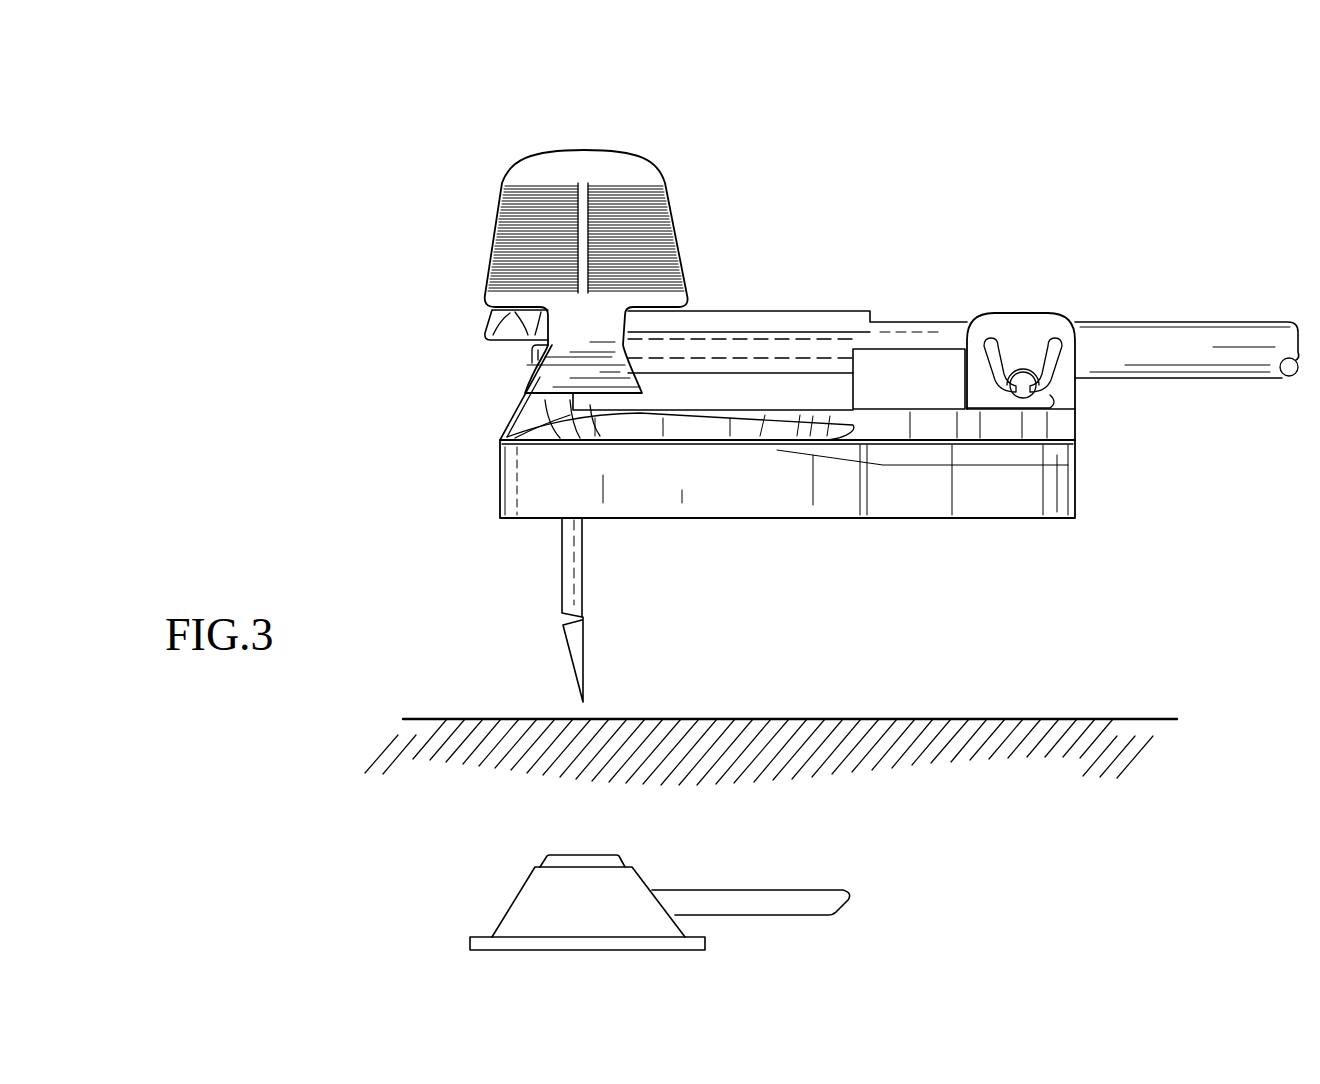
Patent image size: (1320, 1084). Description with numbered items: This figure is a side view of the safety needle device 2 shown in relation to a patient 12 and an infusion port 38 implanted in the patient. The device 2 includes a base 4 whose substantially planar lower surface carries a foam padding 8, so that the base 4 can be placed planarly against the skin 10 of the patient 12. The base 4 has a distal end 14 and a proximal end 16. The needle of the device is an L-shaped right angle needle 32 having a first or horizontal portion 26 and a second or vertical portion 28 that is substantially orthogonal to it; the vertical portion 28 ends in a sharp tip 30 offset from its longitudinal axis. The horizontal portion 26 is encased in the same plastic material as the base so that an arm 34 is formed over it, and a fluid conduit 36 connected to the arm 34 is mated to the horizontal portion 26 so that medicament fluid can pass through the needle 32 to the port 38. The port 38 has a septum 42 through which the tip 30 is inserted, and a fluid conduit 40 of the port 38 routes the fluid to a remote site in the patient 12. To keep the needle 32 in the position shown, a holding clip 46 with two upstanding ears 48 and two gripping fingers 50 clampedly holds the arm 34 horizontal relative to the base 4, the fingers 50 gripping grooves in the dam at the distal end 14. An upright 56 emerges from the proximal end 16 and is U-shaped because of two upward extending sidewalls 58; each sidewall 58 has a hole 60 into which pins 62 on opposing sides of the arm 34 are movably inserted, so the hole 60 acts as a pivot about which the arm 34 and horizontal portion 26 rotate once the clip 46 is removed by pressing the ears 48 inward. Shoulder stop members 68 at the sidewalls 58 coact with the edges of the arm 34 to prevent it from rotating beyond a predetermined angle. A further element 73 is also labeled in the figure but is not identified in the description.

The safety needle device 2 is at (1183, 197).
The base 4 is at (510, 425).
The foam padding 8 is at (1076, 485).
The skin 10 is at (977, 719).
The patient 12 is at (1022, 852).
The distal end 14 is at (442, 462).
The proximal end 16 is at (1106, 434).
The horizontal portion 26 is at (755, 330).
The vertical portion 28 is at (583, 578).
The sharp tip 30 is at (568, 652).
The needle 32 is at (536, 550).
The arm 34 is at (832, 310).
The fluid conduit 36 is at (1178, 320).
The infusion port 38 is at (508, 905).
The fluid conduit of port 40 is at (750, 890).
The septum 42 is at (605, 855).
The holding clip 46 is at (498, 163).
The upstanding ears 48 is at (670, 197).
The gripping fingers 50 is at (540, 378).
The upright 56 is at (1047, 304).
The sidewalls 58 is at (998, 313).
The hole 60 is at (1024, 384).
The pins 62 is at (1060, 405).
The shoulder stop members 68 is at (924, 349).
The latch 73 is at (482, 336).